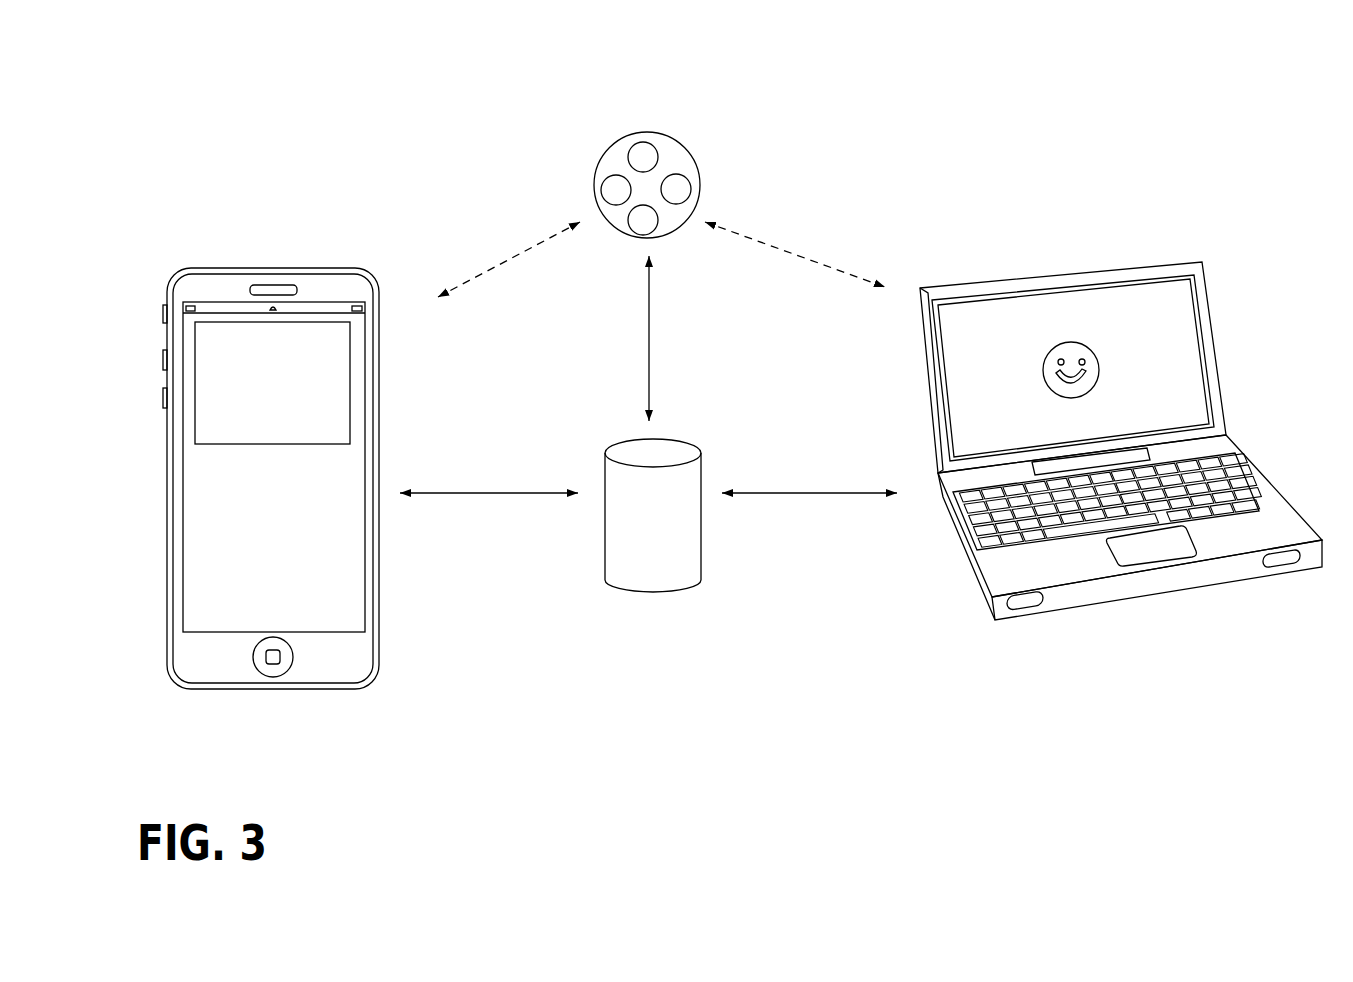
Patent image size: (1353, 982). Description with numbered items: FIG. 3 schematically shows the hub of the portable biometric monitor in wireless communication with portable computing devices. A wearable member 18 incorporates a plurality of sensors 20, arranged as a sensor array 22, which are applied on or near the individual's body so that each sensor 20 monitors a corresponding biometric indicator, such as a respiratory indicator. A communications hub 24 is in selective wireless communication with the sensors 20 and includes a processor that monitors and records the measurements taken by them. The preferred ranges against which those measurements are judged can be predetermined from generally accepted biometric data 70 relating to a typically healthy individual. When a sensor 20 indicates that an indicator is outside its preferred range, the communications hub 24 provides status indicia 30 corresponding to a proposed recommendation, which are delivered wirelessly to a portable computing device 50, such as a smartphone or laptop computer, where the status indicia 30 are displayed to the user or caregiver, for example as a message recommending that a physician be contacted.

The wearable member 18 is at (623, 139).
The sensor 20 is at (650, 157).
The sensor array 22 is at (655, 138).
The communications hub 24 is at (642, 598).
The status indicia 30 is at (347, 360).
The portable computing device 50 is at (270, 252).
The generally accepted biometric data 70 is at (648, 348).